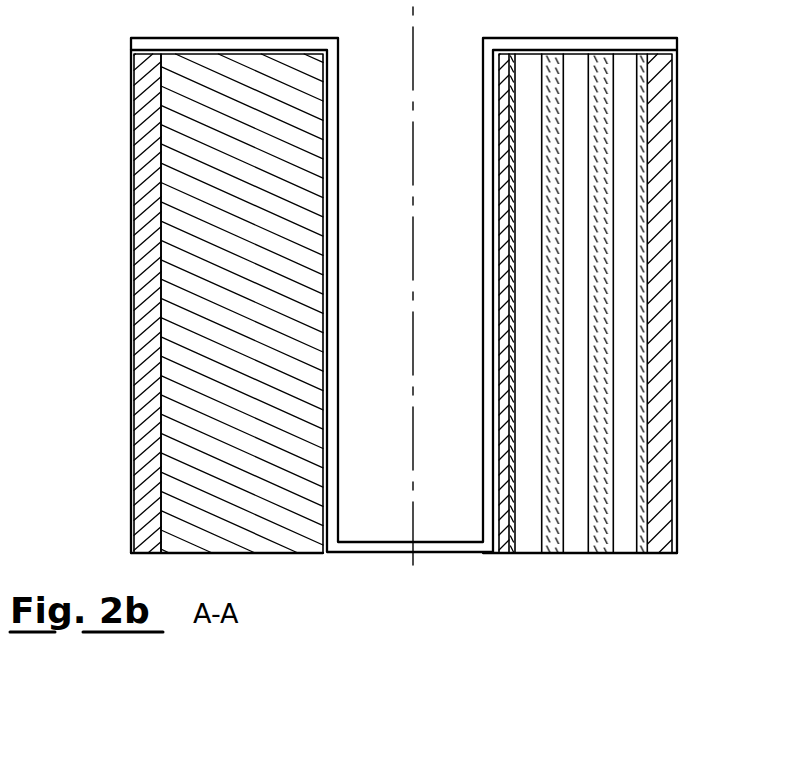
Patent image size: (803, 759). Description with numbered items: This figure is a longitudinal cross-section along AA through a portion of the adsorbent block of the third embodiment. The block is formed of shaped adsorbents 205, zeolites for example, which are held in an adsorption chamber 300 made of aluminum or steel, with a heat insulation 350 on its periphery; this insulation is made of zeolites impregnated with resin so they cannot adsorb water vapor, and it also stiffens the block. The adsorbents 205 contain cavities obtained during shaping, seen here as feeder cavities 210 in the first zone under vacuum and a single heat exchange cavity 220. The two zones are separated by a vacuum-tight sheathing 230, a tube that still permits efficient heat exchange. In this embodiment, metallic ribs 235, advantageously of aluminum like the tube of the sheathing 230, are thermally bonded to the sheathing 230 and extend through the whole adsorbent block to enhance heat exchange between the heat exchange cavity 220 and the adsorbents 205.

The adsorbents 205 is at (647, 477).
The feeder cavities 210 is at (627, 542).
The heat exchange cavity 220 is at (373, 525).
The sheathing 230 is at (460, 548).
The metallic ribs 235 is at (177, 505).
The adsorption chamber 300 is at (131, 395).
The heat insulation 350 is at (153, 227).